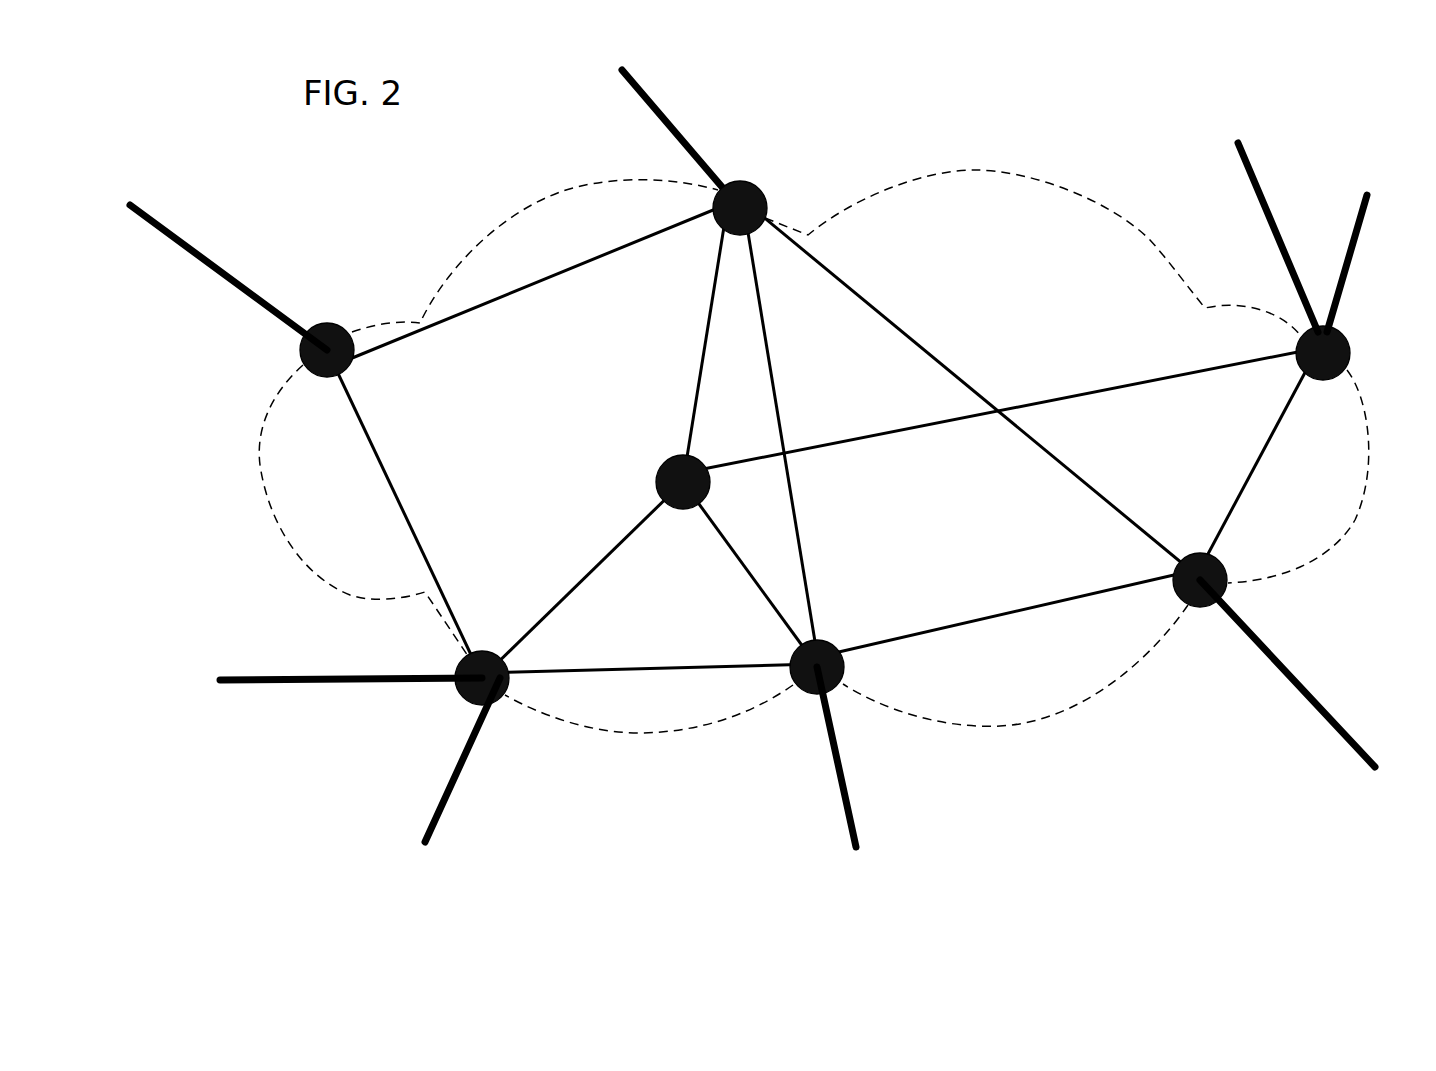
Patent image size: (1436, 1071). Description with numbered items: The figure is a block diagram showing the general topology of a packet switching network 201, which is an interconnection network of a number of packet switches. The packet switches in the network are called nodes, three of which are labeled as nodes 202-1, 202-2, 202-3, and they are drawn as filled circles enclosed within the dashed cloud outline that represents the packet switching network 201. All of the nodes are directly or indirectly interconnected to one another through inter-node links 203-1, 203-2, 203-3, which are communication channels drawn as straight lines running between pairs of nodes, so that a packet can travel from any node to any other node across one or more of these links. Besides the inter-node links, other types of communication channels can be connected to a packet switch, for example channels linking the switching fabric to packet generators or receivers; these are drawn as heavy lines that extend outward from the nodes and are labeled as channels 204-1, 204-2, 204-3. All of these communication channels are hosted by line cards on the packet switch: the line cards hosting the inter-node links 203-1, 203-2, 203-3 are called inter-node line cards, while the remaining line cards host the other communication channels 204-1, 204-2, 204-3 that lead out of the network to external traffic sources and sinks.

The packet switching network 201 is at (973, 170).
The node 202-1 is at (322, 325).
The node 202-2 is at (742, 200).
The node 202-3 is at (467, 706).
The inter-node link 203-1 is at (918, 630).
The inter-node link 203-2 is at (380, 460).
The inter-node link 203-3 is at (886, 318).
The other communication channel 204-1 is at (200, 255).
The other communication channel 204-2 is at (840, 773).
The other communication channel 204-3 is at (1360, 753).